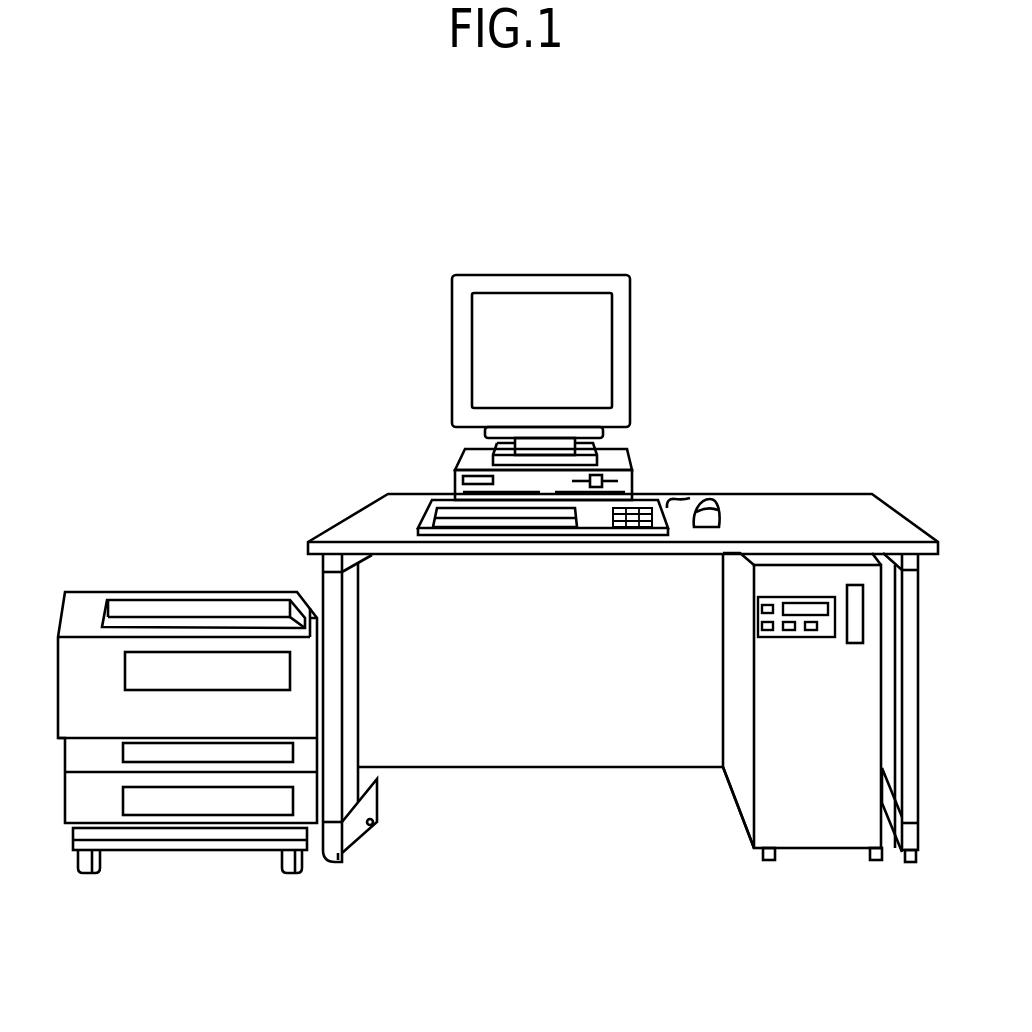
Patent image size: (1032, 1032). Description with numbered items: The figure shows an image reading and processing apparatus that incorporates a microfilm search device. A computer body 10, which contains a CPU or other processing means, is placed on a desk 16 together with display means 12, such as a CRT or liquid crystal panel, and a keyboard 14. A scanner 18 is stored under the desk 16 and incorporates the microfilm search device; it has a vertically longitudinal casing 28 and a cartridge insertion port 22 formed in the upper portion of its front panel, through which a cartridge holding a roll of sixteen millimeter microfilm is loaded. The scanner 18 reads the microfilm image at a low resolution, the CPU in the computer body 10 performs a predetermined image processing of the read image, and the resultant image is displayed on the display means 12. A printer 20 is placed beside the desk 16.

The computer body 10 is at (632, 460).
The display means 12 is at (630, 330).
The keyboard 14 is at (423, 522).
The desk 16 is at (810, 492).
The scanner 18 is at (808, 843).
The printer 20 is at (173, 592).
The cartridge insertion port 22 is at (857, 645).
The casing 28 is at (745, 802).